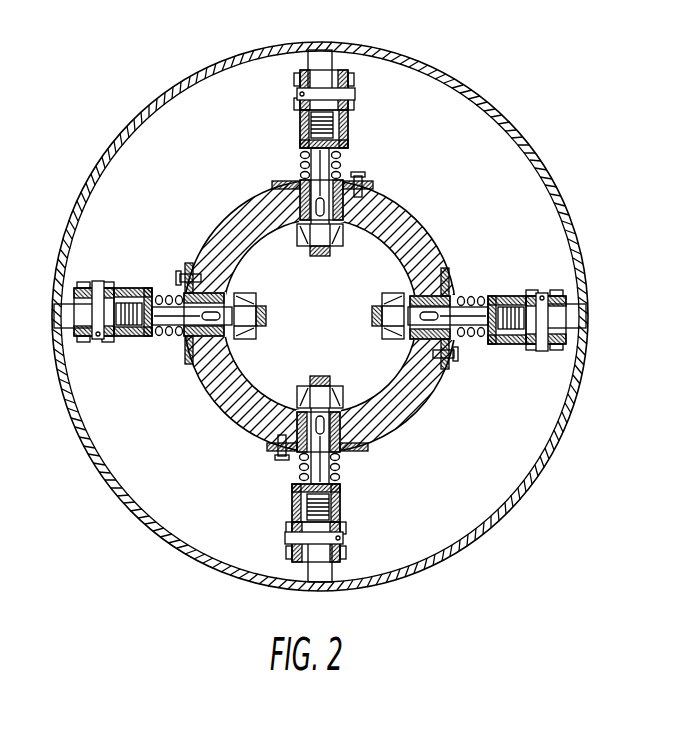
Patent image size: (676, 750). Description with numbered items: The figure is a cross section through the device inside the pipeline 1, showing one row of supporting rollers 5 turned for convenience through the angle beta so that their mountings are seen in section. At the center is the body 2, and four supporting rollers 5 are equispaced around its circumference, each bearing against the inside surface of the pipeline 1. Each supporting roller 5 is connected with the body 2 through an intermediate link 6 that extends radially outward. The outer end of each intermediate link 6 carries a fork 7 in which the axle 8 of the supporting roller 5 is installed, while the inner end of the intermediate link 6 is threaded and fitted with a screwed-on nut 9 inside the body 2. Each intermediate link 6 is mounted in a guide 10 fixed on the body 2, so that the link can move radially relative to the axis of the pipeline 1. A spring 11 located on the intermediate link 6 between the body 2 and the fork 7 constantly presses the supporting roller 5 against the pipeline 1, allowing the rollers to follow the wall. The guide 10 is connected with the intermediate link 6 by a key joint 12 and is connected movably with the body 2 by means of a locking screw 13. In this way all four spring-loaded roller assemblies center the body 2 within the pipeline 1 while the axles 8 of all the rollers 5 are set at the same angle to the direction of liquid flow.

The pipeline 1 is at (197, 73).
The body 2 is at (201, 372).
The supporting roller 5 is at (320, 58).
The intermediate link 6 is at (315, 156).
The fork 7 is at (308, 125).
The axle 8 is at (302, 91).
The nut 9 is at (306, 390).
The guide 10 is at (302, 193).
The spring 11 is at (298, 464).
The key joint 12 is at (303, 225).
The locking screw 13 is at (281, 456).